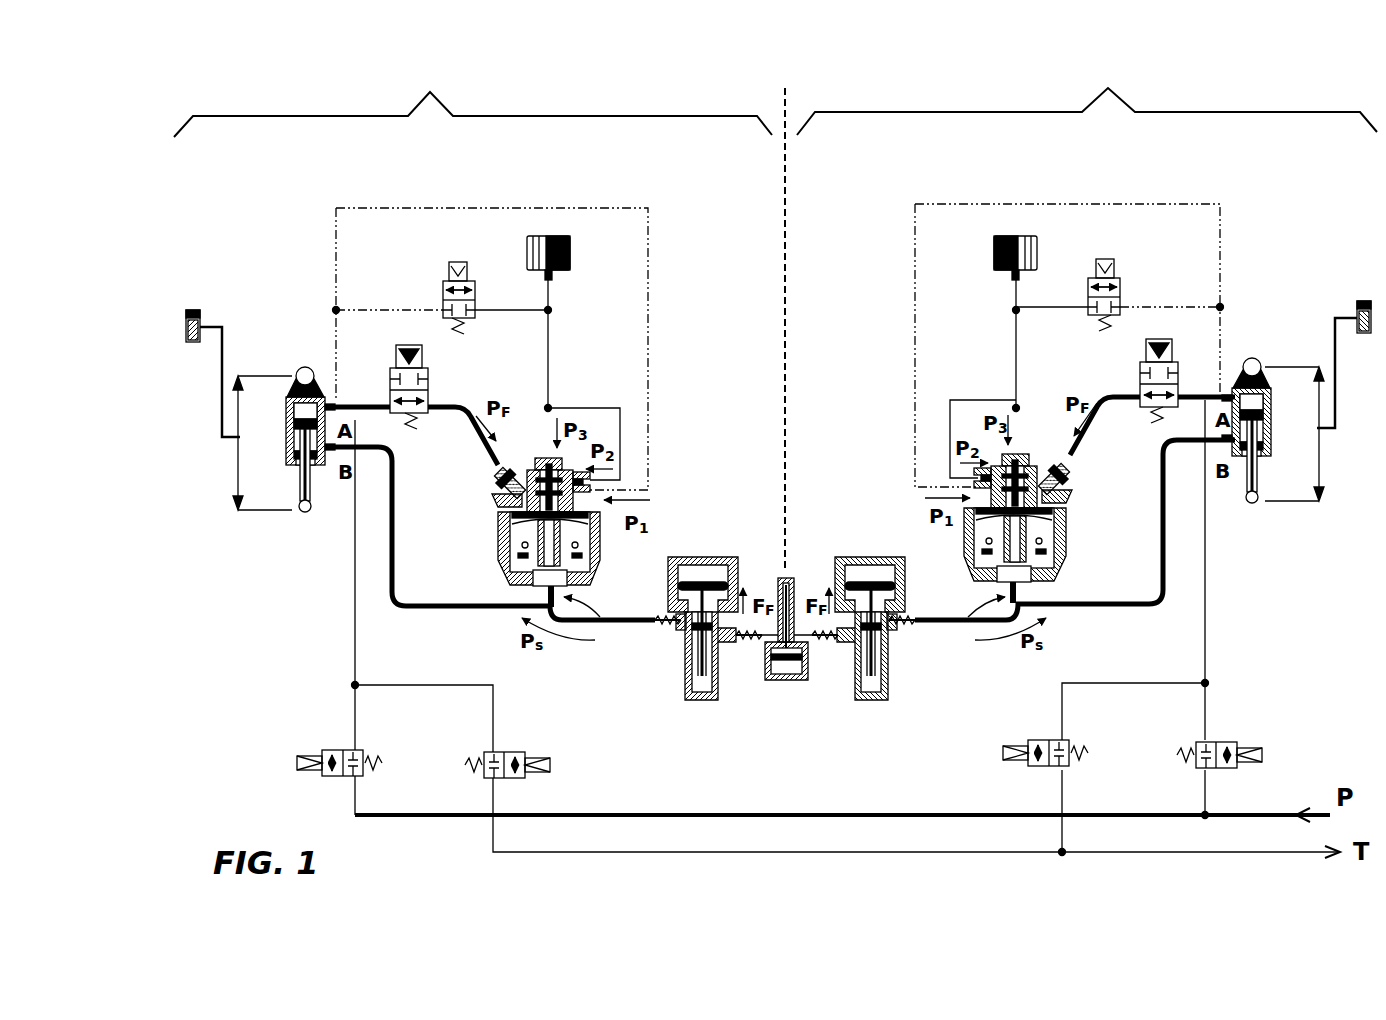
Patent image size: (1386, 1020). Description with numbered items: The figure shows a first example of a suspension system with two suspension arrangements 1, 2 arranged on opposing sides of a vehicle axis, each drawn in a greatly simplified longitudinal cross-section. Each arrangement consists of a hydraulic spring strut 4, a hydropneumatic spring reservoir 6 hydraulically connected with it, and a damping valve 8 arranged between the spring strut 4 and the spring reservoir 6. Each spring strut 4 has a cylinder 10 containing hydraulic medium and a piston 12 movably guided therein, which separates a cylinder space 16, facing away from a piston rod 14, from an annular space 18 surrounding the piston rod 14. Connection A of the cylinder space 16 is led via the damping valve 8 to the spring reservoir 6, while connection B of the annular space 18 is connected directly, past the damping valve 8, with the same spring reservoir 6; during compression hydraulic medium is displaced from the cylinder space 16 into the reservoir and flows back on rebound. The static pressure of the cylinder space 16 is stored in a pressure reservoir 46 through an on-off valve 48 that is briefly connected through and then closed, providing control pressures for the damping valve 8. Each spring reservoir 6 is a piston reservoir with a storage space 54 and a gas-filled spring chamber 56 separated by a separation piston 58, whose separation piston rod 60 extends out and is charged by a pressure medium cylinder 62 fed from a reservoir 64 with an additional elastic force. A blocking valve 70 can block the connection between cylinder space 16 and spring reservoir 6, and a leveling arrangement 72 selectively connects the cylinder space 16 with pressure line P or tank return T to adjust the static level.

The suspension arrangement 1 is at (473, 94).
The suspension arrangement 2 is at (1087, 93).
The hydraulic spring strut 4 is at (781, 429).
The hydropneumatic spring reservoir 6 is at (791, 622).
The damping valve 8 is at (500, 578).
The cylinder 10 is at (291, 452).
The piston 12 is at (306, 426).
The piston rod 14 is at (305, 490).
The cylinder space 16 is at (308, 416).
The annular space 18 is at (314, 462).
The pressure reservoir 46 is at (548, 230).
The on-off valve 48 is at (456, 254).
The storage space 54 is at (688, 604).
The spring chamber 56 is at (697, 574).
The separation piston 58 is at (717, 572).
The separation piston rod 60 is at (700, 654).
The pressure medium cylinder 62 is at (698, 690).
The reservoir 64 is at (792, 690).
The blocking valve 70 is at (405, 338).
The leveling arrangement 72 is at (480, 740).